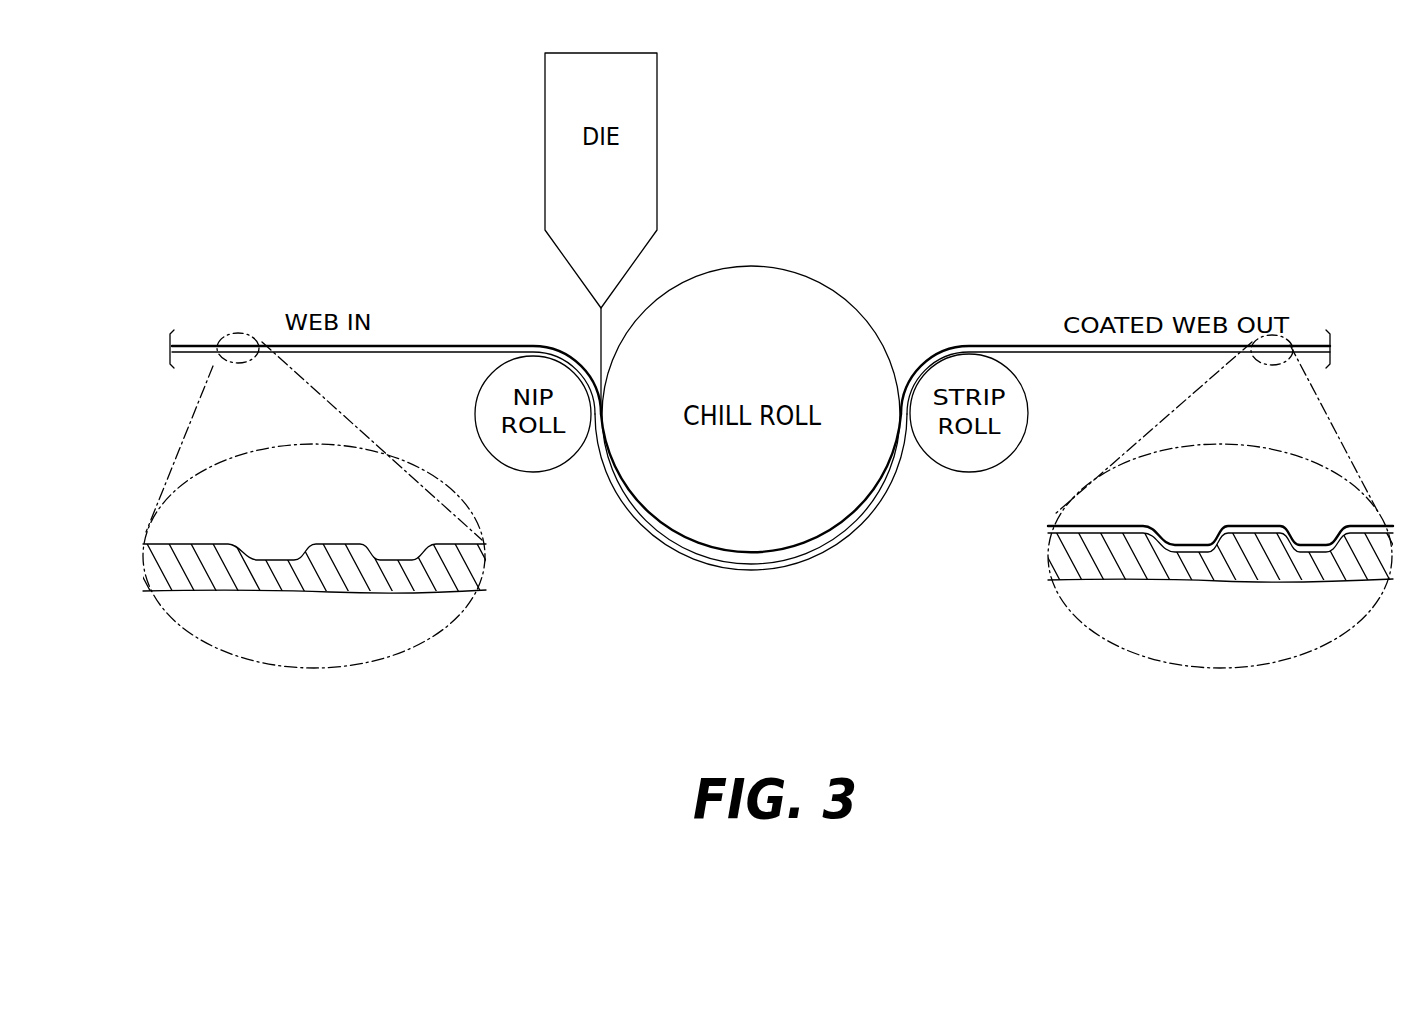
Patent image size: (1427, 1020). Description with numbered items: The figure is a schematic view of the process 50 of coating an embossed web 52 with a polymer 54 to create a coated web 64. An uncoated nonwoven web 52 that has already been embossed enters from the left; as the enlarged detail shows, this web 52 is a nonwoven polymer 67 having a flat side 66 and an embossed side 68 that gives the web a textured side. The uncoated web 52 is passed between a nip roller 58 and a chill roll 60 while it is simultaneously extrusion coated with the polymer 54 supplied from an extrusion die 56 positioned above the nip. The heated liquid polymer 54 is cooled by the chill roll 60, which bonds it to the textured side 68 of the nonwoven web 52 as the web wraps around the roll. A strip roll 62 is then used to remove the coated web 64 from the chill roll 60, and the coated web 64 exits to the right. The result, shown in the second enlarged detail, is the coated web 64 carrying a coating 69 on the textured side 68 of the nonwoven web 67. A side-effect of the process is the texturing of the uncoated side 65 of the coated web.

The process 50 is at (946, 278).
The embossed web 52 is at (404, 344).
The polymer 54 is at (600, 336).
The extrusion die 56 is at (640, 186).
The nip roller 58 is at (548, 476).
The chill roll 60 is at (748, 545).
The strip roll 62 is at (960, 473).
The coated web 64 is at (1030, 345).
The uncoated side 65 is at (1248, 582).
The flat side 66 is at (353, 575).
The nonwoven polymer 67 is at (436, 584).
The embossed side 68 is at (333, 543).
The coating 69 is at (1342, 529).